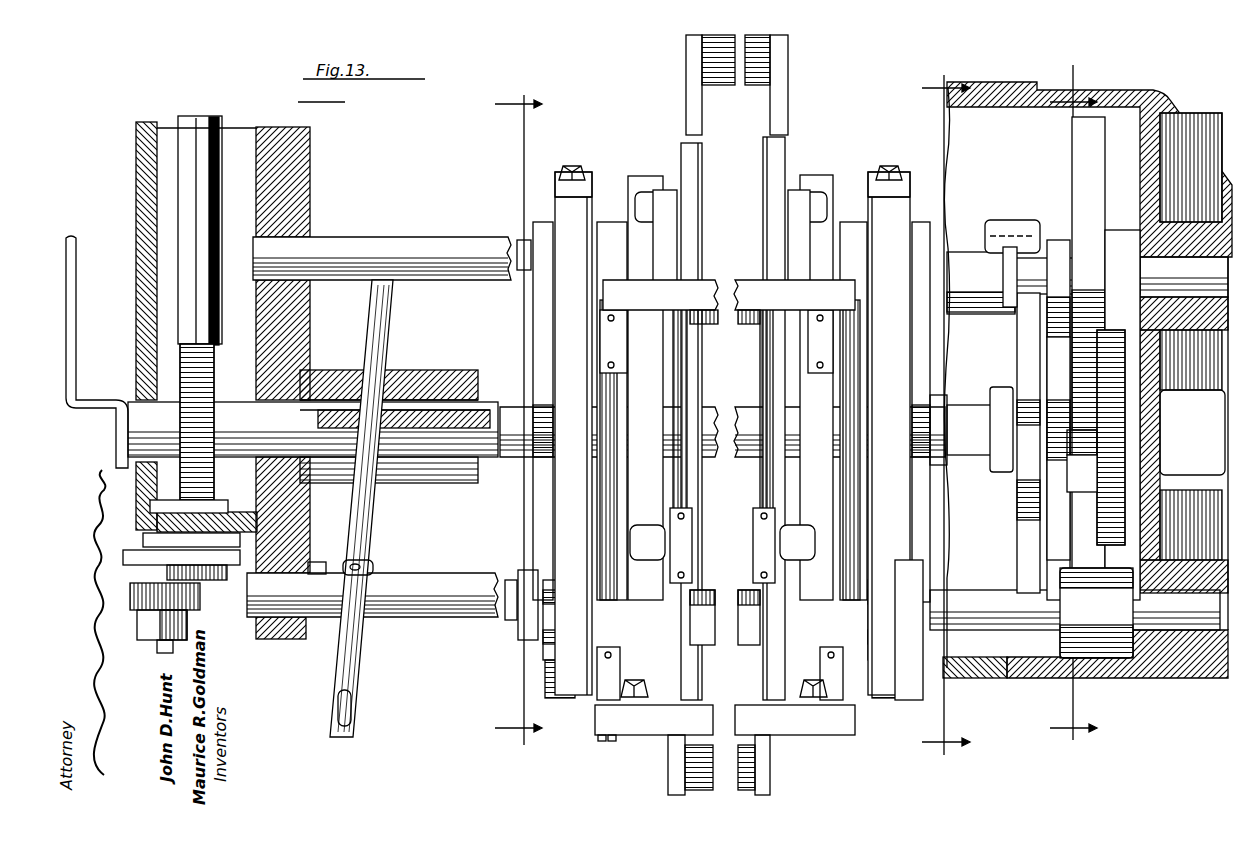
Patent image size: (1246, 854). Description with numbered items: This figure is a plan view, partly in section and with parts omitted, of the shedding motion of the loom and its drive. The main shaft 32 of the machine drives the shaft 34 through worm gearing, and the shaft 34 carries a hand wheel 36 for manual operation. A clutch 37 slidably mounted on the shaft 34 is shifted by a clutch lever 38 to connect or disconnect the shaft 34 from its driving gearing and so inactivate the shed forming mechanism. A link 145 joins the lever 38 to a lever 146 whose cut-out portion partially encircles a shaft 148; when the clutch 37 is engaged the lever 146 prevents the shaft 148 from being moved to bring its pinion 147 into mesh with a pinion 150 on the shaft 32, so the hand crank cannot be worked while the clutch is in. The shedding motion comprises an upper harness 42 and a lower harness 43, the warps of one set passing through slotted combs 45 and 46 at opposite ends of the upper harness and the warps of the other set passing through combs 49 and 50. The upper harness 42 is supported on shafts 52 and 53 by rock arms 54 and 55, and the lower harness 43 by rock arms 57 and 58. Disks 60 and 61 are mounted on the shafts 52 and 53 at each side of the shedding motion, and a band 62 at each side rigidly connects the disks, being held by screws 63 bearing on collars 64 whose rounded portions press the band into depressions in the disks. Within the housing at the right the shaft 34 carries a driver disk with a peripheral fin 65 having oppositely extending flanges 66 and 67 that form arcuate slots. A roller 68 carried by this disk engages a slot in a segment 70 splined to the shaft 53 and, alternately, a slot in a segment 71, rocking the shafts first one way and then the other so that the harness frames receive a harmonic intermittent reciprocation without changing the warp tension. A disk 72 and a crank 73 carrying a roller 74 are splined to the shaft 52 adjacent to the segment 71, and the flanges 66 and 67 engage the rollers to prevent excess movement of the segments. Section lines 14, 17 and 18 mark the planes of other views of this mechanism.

The main shaft 32 is at (222, 122).
The hand wheel 36 is at (76, 320).
The shaft 34 is at (265, 405).
The clutch member 37 is at (410, 380).
The shaft 52 is at (445, 242).
The shaft 53 is at (432, 580).
The clutch lever 38 is at (350, 675).
The link 145 is at (320, 568).
The lever 146 is at (150, 560).
The pinion 150 is at (225, 575).
The pinion 147 is at (200, 595).
The shaft 148 is at (180, 640).
The section line 18 is at (518, 427).
The section line 14 is at (946, 411).
The section line 17 is at (1073, 400).
The disk 60 is at (566, 218).
The collar 64 is at (556, 190).
The screw 63 is at (578, 168).
The rock arm 54 is at (603, 235).
The disk 61 is at (898, 535).
The rock arm 57 is at (790, 232).
The band 62 is at (552, 485).
The comb 45 is at (718, 296).
The comb 49 is at (710, 322).
The rock arm 58 is at (775, 580).
The rock arm 55 is at (588, 705).
The comb 50 is at (692, 650).
The comb 46 is at (745, 718).
The upper harness 42 is at (808, 722).
The lower harness 43 is at (790, 103).
The disk 72 is at (1098, 176).
The segment 71 is at (1112, 258).
The flange 67 is at (1053, 300).
The roller 74 is at (1025, 228).
The crank 73 is at (1006, 298).
The segment 70 is at (1100, 533).
The flange 66 is at (1012, 548).
The roller 68 is at (1082, 470).
The fin 65 is at (1022, 580).